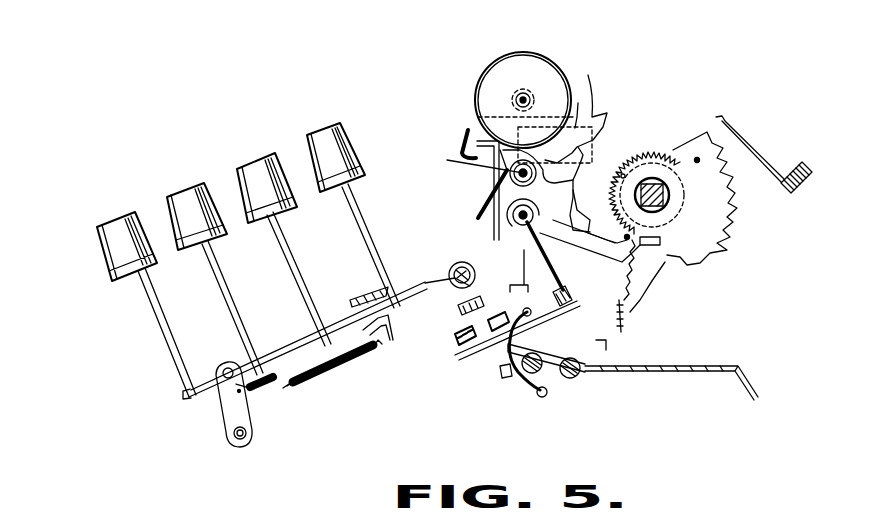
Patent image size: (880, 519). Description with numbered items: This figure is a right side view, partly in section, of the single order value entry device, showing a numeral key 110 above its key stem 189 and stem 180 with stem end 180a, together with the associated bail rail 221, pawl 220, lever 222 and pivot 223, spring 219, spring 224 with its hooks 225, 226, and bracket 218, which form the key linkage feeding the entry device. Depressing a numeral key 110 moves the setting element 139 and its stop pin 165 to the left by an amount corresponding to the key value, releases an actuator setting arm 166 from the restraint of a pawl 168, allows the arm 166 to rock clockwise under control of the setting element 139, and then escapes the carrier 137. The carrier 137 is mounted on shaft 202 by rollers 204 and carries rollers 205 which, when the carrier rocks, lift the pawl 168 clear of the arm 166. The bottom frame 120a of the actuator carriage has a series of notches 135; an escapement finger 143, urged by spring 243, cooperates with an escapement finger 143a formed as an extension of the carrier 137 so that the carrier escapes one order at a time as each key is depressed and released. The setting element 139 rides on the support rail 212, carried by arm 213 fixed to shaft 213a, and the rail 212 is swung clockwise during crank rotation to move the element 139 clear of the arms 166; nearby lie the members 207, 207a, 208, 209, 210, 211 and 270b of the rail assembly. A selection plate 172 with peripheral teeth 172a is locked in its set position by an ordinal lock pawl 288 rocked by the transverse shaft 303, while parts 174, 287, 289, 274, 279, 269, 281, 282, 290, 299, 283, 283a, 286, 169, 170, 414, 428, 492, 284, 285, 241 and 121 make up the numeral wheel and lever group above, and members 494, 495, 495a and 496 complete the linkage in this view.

The numeral key 110 is at (113, 225).
The key stems 180 is at (143, 309).
The key stem end 180a is at (183, 394).
The key bail rail 221 is at (284, 348).
The pawl 220 is at (302, 342).
The lever 222 is at (232, 408).
The pivot pin 223 is at (233, 437).
The spring 219 is at (262, 393).
The key stem 189 is at (357, 217).
The spring 224 is at (345, 372).
The spring hook 226 is at (290, 386).
The spring hook 225 is at (379, 348).
The bracket 218 is at (445, 312).
The shaft 213a is at (455, 265).
The arm 213 is at (450, 278).
The support rail 212 is at (478, 357).
The spring 211 is at (455, 339).
The spring 210 is at (458, 348).
The hook arm 207a is at (524, 305).
The rail 207 is at (520, 342).
The shaft 202 is at (525, 375).
The roller 205 is at (572, 385).
The roller 204 is at (495, 375).
The carrier 137 is at (497, 383).
The arm 209 is at (532, 398).
The pin 270b is at (548, 400).
The foot 208 is at (530, 283).
The rod 495 is at (522, 264).
The link 494 is at (512, 254).
The bar 495a is at (540, 244).
The stop pin 165 is at (569, 298).
The setting element 139 is at (566, 312).
The spring 243 is at (598, 348).
The bottom frame 120a is at (718, 366).
The escapement finger 143 is at (600, 366).
The notches 135 is at (602, 372).
The escapement finger 143a is at (598, 380).
The wheel 121 is at (524, 52).
The hub 241 is at (520, 93).
The shaft 285 is at (535, 93).
The arm 284 is at (478, 130).
The hook 492 is at (462, 135).
The rod 428 is at (493, 160).
The bracket 414 is at (494, 180).
The lever arm 283a is at (478, 218).
The pivot 286 is at (536, 165).
The pivot 169 is at (534, 210).
The bearing 170 is at (540, 220).
The lever 283 is at (622, 95).
The lever edge 299 is at (593, 112).
The plate 290 is at (617, 233).
The arm 496 is at (560, 272).
The stub 289 is at (660, 241).
The gear sector 282 is at (603, 141).
The shaft 281 is at (657, 150).
The link 269 is at (660, 180).
The pivot 279 is at (697, 160).
The shaft 274 is at (667, 200).
The selection plate 172 is at (730, 232).
The peripheral teeth 172a is at (733, 188).
The plate edge 287 is at (690, 266).
The arm 174 is at (640, 283).
The actuator setting arm 166 is at (635, 300).
The pawl 168 is at (630, 318).
The ordinal lock pawl 288 is at (765, 158).
The transverse shaft 303 is at (808, 172).